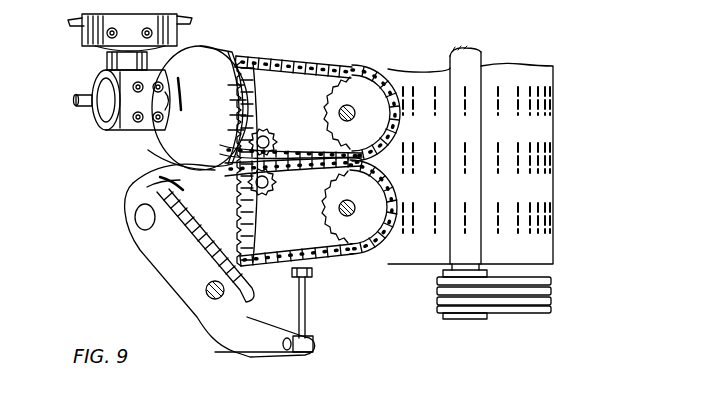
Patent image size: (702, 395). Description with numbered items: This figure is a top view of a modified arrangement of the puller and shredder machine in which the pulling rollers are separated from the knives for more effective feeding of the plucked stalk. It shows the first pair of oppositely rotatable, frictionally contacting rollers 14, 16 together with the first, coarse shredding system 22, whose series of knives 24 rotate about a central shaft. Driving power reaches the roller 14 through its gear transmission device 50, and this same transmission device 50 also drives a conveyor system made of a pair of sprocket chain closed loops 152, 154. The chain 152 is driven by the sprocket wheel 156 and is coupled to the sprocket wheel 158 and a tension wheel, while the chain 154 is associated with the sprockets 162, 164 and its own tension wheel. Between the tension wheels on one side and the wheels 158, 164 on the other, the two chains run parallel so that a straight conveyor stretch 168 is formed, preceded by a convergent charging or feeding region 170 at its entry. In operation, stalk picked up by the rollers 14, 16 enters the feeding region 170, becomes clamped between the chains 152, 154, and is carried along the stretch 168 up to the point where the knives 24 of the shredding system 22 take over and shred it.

The roller 14 is at (183, 46).
The roller 16 is at (128, 186).
The first, coarse shredding system 22 is at (434, 49).
The knives 24 is at (545, 190).
The gear transmission device 50 is at (98, 88).
The sprocket chain closed loop 152 is at (306, 58).
The sprocket chain closed loop 154 is at (322, 262).
The sprocket wheel 156 is at (257, 56).
The sprocket wheel 158 is at (343, 88).
The sprocket 162 is at (246, 218).
The sprocket 164 is at (352, 260).
The straight conveyor stretch 168 is at (315, 147).
The convergent charging or feeding region 170 is at (158, 152).